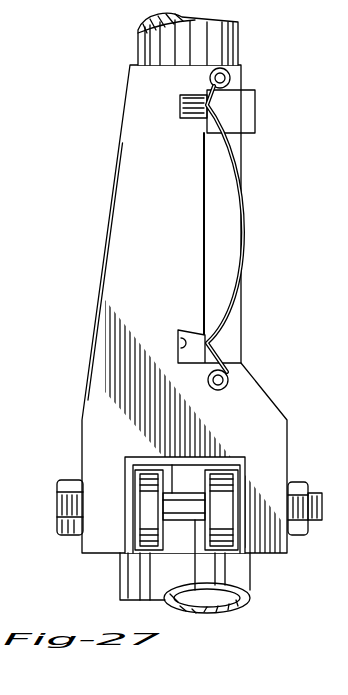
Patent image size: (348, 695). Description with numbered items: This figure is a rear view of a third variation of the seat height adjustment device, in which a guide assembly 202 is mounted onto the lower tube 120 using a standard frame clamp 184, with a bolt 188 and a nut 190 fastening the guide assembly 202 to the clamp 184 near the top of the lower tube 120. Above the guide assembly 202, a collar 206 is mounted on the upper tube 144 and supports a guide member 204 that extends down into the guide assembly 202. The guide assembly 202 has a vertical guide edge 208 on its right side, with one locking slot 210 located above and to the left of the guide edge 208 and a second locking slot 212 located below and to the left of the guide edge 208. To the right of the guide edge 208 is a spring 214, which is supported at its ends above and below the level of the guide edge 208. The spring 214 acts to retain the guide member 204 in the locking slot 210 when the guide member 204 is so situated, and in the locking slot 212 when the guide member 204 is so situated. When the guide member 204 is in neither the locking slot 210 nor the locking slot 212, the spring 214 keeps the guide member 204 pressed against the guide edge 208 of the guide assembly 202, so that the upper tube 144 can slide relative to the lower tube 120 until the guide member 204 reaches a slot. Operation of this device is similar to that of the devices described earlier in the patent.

The lower tube 120 is at (246, 572).
The upper tube 144 is at (235, 49).
The frame clamp 184 is at (150, 550).
The bolt 188 is at (75, 538).
The nut 190 is at (290, 538).
The guide assembly 202 is at (70, 452).
The guide member 204 is at (198, 116).
The collar 206 is at (250, 106).
The guide edge 208 is at (203, 233).
The locking slot 210 is at (195, 100).
The locking slot 212 is at (180, 341).
The spring 214 is at (238, 152).